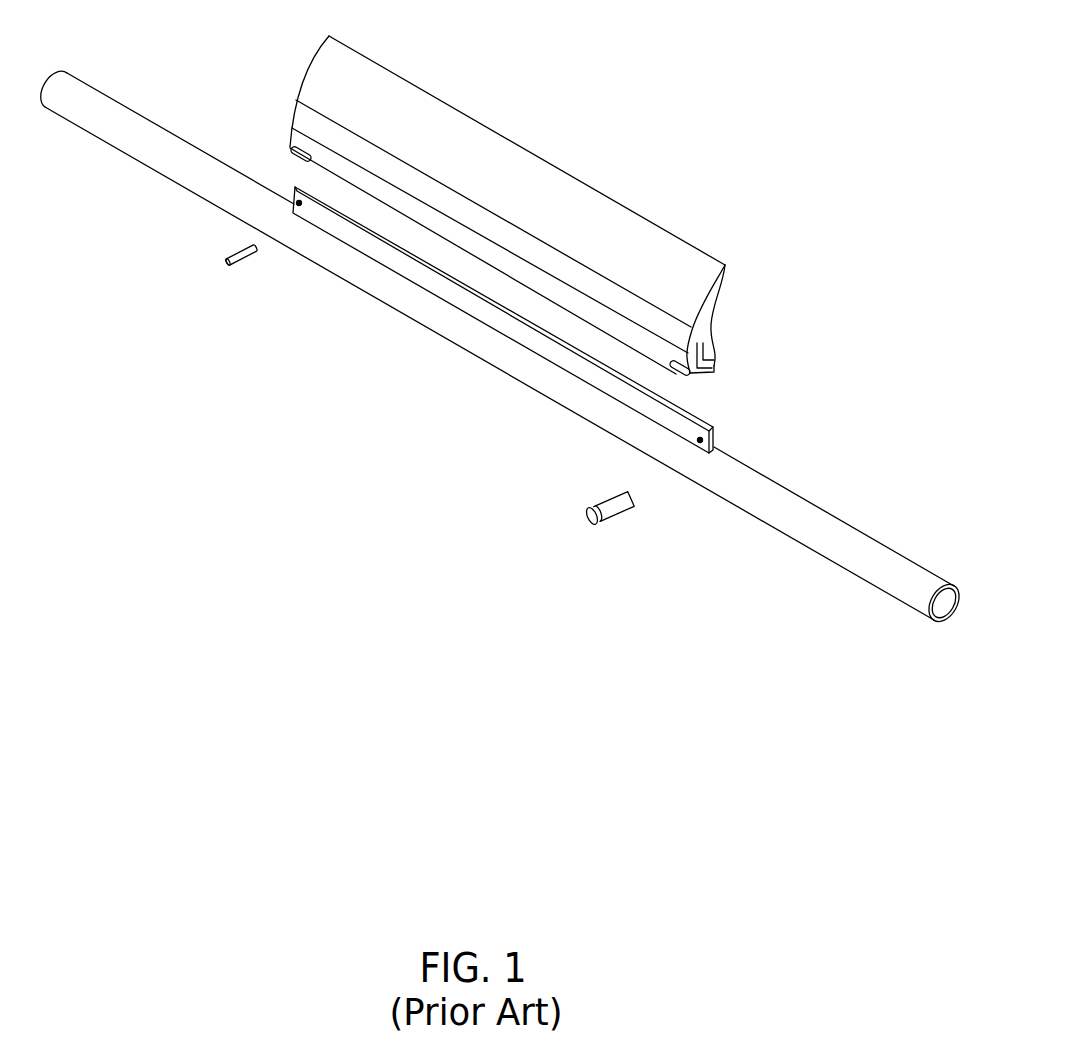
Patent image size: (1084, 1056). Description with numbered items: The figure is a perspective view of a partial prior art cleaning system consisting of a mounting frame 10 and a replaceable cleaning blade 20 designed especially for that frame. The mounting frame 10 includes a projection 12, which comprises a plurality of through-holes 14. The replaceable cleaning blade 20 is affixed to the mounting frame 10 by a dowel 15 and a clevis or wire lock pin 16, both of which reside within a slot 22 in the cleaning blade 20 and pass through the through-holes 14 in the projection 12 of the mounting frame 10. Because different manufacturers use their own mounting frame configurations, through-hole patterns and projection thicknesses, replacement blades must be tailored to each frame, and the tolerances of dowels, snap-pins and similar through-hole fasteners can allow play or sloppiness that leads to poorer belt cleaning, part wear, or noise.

The mounting frame 10 is at (132, 145).
The projection 12 is at (713, 428).
The through-holes 14 is at (298, 203).
The dowel 15 is at (244, 258).
The clevis or wire lock pin 16 is at (588, 516).
The replaceable cleaning blade 20 is at (603, 217).
The slot 22 is at (290, 150).